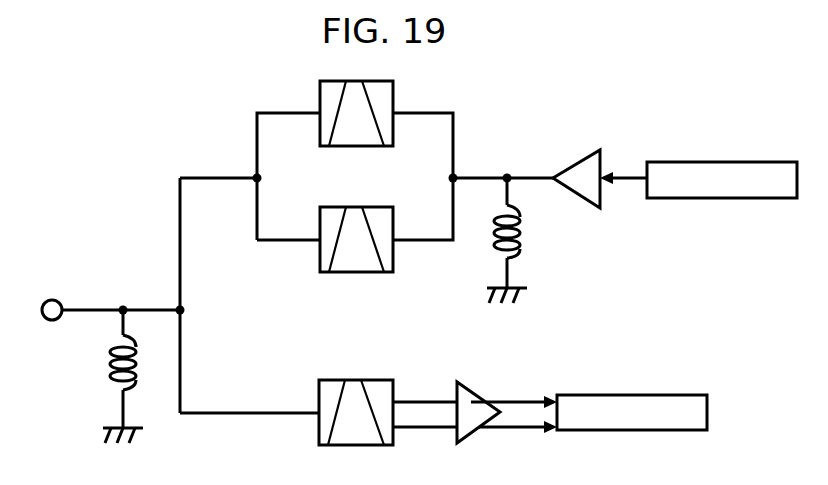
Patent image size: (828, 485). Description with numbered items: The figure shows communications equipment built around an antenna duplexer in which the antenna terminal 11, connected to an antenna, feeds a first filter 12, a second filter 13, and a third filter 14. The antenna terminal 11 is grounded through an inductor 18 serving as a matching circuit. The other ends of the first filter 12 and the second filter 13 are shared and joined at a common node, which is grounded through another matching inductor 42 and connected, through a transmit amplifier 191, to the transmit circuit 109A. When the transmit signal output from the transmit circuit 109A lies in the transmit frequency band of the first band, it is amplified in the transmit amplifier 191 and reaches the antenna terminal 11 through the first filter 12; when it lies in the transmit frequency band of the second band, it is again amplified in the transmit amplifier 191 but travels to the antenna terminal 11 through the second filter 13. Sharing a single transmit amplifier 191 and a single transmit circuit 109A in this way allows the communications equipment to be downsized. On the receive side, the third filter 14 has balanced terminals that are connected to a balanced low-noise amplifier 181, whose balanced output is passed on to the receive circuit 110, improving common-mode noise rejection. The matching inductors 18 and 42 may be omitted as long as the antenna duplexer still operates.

The antenna terminal 11 is at (47, 299).
The first filter 12 is at (393, 96).
The second filter 13 is at (393, 261).
The third filter 14 is at (393, 440).
The inductor 18 is at (100, 373).
The inductor 42 is at (530, 240).
The balanced low-noise amplifier 181 is at (472, 388).
The transmit amplifier 191 is at (590, 150).
The transmit circuit 109A is at (748, 162).
The receive circuit 110 is at (632, 395).